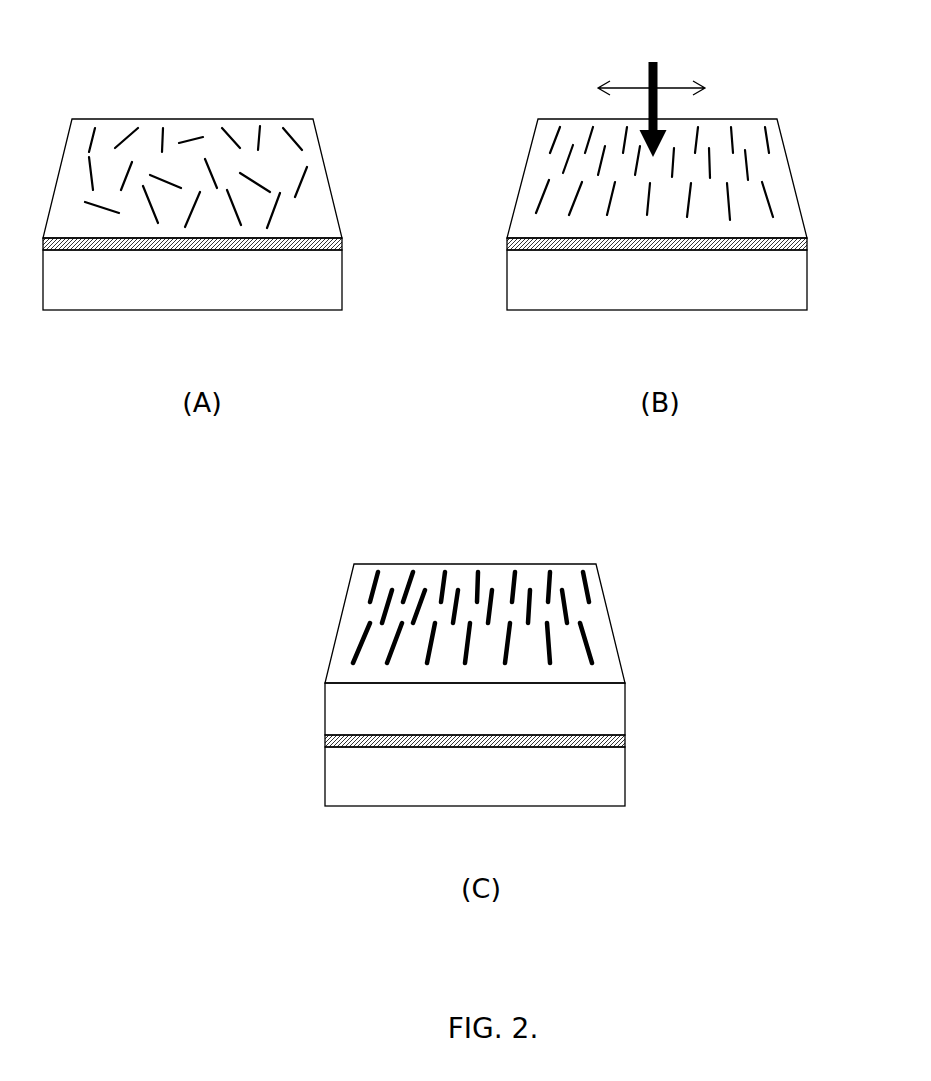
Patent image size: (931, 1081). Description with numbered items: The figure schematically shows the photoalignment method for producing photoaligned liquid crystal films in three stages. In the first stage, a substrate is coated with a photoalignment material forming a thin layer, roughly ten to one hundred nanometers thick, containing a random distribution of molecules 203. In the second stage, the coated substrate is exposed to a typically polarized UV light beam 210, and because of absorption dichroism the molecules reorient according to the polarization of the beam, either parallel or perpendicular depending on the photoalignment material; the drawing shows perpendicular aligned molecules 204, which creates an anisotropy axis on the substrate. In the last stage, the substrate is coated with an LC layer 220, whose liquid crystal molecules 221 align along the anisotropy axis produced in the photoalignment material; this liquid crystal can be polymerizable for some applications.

The randomly distributed molecules 203 is at (192, 136).
The perpendicular aligned molecules 204 is at (555, 143).
The UV light beam 210 is at (658, 78).
The LC layer 220 is at (603, 660).
The LC molecules 221 is at (555, 588).